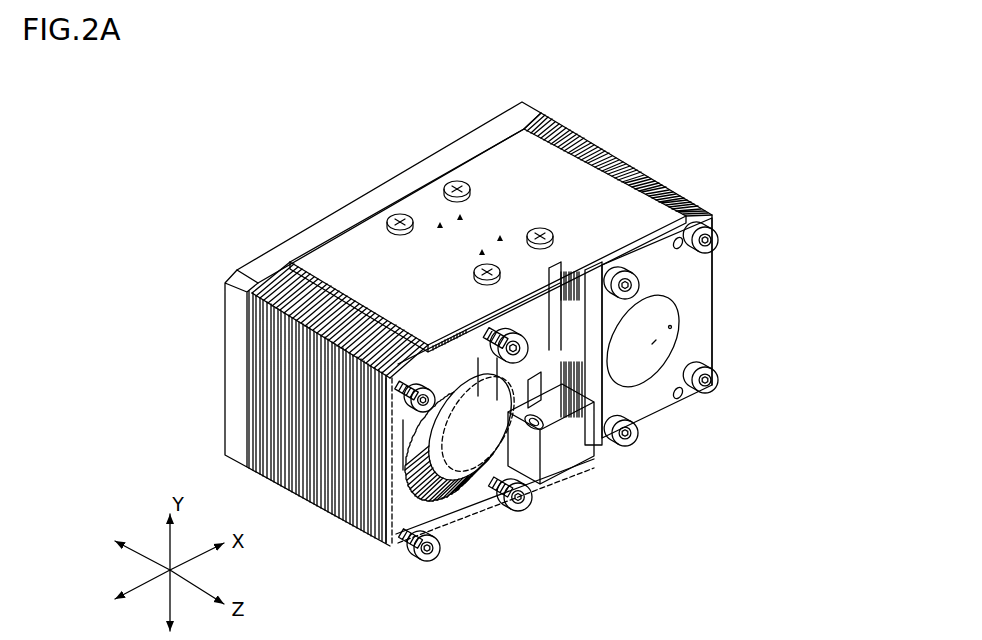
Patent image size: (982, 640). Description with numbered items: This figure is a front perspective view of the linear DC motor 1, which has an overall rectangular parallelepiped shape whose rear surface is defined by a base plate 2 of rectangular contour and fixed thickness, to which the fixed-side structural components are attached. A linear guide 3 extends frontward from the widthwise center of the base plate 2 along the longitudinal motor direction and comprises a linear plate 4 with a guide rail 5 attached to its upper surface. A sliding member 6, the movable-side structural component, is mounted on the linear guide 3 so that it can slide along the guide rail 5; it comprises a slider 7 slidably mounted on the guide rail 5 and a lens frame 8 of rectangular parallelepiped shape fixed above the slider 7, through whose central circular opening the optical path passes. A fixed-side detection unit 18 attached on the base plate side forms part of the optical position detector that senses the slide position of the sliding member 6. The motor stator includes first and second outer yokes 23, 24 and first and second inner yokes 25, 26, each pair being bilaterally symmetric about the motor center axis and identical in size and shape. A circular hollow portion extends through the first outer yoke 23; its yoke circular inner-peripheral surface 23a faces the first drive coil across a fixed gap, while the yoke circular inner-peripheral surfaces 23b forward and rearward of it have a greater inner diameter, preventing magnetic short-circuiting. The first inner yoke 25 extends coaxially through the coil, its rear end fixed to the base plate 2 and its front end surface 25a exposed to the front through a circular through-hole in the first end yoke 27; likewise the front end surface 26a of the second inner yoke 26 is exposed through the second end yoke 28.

The linear DC motor 1 is at (349, 145).
The base plate 2 is at (220, 310).
The linear guide 3 is at (632, 507).
The linear plate 4 is at (584, 455).
The guide rail 5 is at (562, 462).
The sliding member 6 is at (704, 459).
The slider 7 is at (541, 394).
The lens frame 8 is at (543, 357).
The fixed-side detection unit 18 is at (557, 185).
The first outer yoke 23 is at (245, 363).
The yoke circular inner-peripheral surface 23a is at (425, 465).
The yoke circular inner-peripheral surfaces 23b is at (458, 494).
The second outer yoke 24 is at (648, 168).
The first inner yoke 25 is at (450, 462).
The front end surface 25a is at (472, 466).
The second inner yoke 26 is at (657, 320).
The front end surface 26a is at (652, 344).
The first end yoke 27 is at (392, 514).
The second end yoke 28 is at (690, 300).